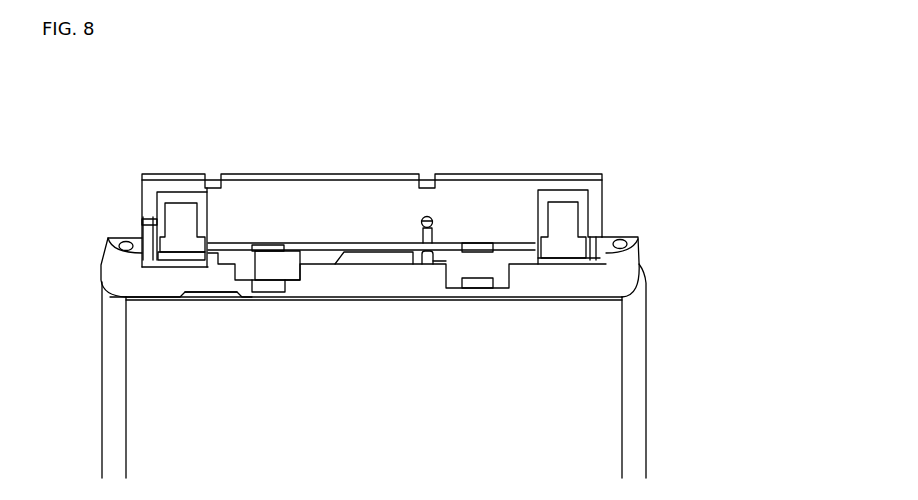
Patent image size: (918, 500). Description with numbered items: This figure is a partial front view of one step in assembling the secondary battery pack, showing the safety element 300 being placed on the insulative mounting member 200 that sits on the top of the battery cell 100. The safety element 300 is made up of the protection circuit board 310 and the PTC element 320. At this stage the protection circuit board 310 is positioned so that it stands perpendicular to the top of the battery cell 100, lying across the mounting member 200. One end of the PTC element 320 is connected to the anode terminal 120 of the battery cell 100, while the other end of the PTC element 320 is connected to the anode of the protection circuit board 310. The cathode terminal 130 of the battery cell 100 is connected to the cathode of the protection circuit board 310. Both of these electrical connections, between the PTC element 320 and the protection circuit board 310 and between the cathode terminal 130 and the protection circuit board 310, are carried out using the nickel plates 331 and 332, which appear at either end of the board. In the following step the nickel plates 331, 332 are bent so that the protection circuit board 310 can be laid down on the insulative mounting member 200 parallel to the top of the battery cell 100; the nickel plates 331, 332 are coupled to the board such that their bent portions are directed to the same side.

The battery cell 100 is at (646, 413).
The anode terminal 120 is at (392, 281).
The cathode terminal 130 is at (187, 281).
The insulative mounting member 200 is at (640, 250).
The safety element 300 is at (358, 177).
The protection circuit board 310 is at (338, 174).
The PTC element 320 is at (300, 268).
The nickel plate 331 is at (178, 227).
The nickel plate 332 is at (573, 215).